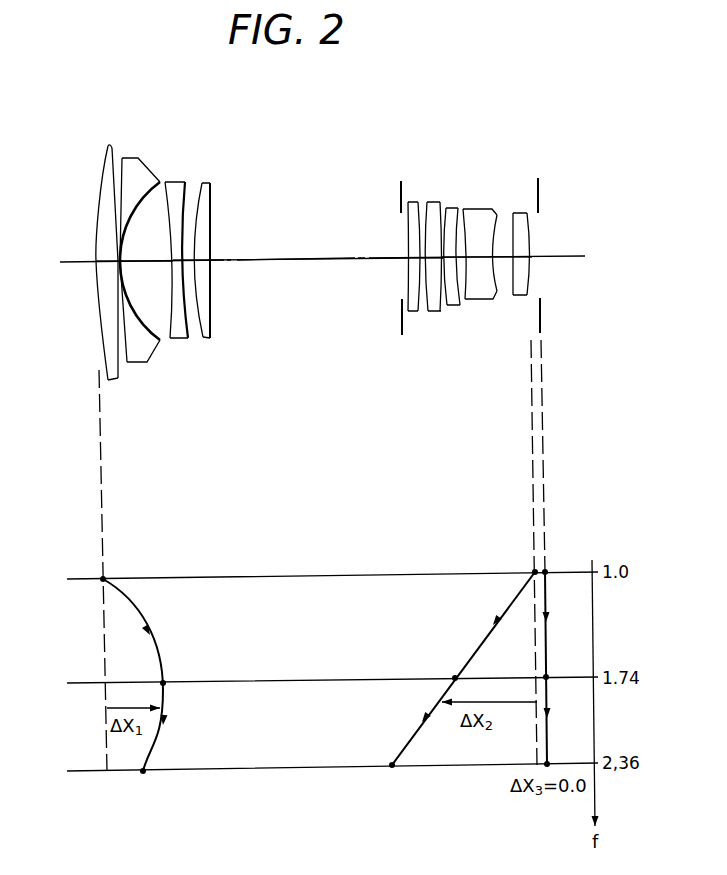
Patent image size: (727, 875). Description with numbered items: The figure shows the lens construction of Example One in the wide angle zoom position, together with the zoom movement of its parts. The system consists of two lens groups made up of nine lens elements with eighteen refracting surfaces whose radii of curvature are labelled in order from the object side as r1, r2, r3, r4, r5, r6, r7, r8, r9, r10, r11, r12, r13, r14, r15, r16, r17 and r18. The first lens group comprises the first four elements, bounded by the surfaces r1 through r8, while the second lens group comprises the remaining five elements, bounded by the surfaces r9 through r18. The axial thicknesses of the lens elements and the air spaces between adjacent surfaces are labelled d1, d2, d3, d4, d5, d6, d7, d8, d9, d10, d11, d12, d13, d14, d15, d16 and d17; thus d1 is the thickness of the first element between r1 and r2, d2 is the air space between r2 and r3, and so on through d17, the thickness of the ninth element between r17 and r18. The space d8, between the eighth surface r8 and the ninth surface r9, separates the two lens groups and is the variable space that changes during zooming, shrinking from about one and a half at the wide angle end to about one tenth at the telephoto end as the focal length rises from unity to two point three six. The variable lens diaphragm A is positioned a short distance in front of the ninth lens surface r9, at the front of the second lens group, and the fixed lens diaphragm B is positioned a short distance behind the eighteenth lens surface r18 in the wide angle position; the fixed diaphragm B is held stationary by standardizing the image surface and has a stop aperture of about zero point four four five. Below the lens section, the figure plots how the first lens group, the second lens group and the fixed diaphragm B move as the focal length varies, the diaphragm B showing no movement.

The first lens surface radius of curvature r1 is at (104, 145).
The second lens surface radius of curvature r2 is at (109, 150).
The third lens surface radius of curvature r3 is at (125, 158).
The fourth lens surface radius of curvature r4 is at (156, 183).
The fifth lens surface radius of curvature r5 is at (168, 182).
The sixth lens surface radius of curvature r6 is at (187, 183).
The seventh lens surface radius of curvature r7 is at (203, 184).
The eighth lens surface radius of curvature r8 is at (212, 184).
The ninth lens surface radius of curvature r9 is at (408, 201).
The tenth lens surface radius of curvature r10 is at (418, 201).
The eleventh lens surface radius of curvature r11 is at (428, 201).
The twelfth lens surface radius of curvature r12 is at (441, 201).
The thirteenth lens surface radius of curvature r13 is at (447, 207).
The fourteenth lens surface radius of curvature r14 is at (459, 207).
The fifteenth lens surface radius of curvature r15 is at (466, 208).
The sixteenth lens surface radius of curvature r16 is at (496, 212).
The seventeenth lens surface radius of curvature r17 is at (514, 212).
The eighteenth lens surface radius of curvature r18 is at (529, 212).
The first lens thickness d1 is at (106, 264).
The first air space d2 is at (119, 264).
The second lens thickness d3 is at (121, 264).
The second air space d4 is at (160, 263).
The third lens thickness d5 is at (178, 264).
The third air space d6 is at (186, 263).
The fourth lens thickness d7 is at (199, 262).
The variable air space between lens groups d8 is at (256, 262).
The fifth lens thickness d9 is at (408, 265).
The fourth air space d10 is at (421, 268).
The sixth lens thickness d11 is at (434, 311).
The fifth air space d12 is at (444, 262).
The seventh lens thickness d13 is at (451, 265).
The sixth air space d14 is at (462, 262).
The eighth lens thickness d15 is at (482, 263).
The seventh air space d16 is at (505, 263).
The ninth lens thickness d17 is at (521, 261).
The variable lens diaphragm A is at (400, 197).
The fixed lens diaphragm B is at (539, 202).